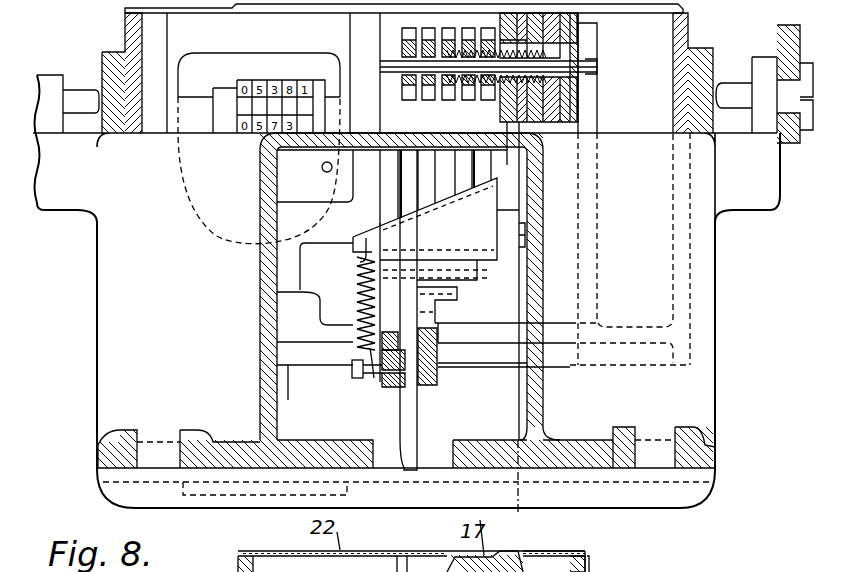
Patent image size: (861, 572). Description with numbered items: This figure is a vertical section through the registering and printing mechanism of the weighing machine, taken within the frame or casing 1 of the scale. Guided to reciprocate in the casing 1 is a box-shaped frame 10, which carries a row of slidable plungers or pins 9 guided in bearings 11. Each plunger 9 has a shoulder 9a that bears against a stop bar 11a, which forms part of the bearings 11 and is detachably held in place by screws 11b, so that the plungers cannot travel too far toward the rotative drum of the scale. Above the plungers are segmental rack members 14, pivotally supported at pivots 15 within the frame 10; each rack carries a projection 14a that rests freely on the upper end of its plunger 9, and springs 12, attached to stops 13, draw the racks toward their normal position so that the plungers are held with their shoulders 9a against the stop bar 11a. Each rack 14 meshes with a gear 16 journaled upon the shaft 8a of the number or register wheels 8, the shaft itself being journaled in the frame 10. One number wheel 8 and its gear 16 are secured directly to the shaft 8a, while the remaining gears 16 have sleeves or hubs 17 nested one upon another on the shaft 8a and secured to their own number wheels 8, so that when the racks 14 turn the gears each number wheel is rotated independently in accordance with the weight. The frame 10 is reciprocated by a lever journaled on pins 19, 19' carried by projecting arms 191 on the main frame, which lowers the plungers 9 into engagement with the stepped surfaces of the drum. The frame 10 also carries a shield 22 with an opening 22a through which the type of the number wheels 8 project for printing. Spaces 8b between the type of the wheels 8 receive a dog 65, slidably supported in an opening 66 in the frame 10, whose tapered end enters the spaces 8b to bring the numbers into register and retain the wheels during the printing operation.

The frame or casing 1 is at (716, 291).
The number wheels 8 is at (572, 90).
The shaft 8a is at (626, 66).
The spaces 8b is at (440, 570).
The plungers 9 is at (418, 417).
The shoulders 9a is at (405, 350).
The box-shaped frame 10 is at (695, 40).
The bearings 11 is at (438, 374).
The stop bar 11a is at (397, 390).
The screws 11b is at (374, 380).
The springs 12 is at (356, 298).
The stops 13 is at (352, 380).
The segmental rack members 14 is at (480, 175).
The projections 14a is at (479, 241).
The pivots 15 is at (525, 247).
The gears 16 is at (402, 28).
The sleeves or hubs 17 is at (457, 31).
The pins 19 is at (746, 95).
The stud 19' is at (69, 78).
The projecting arms 191 is at (762, 57).
The shield 22 is at (647, 10).
The opening 22a is at (544, 531).
The dog 65 is at (598, 571).
The opening 66 is at (590, 571).